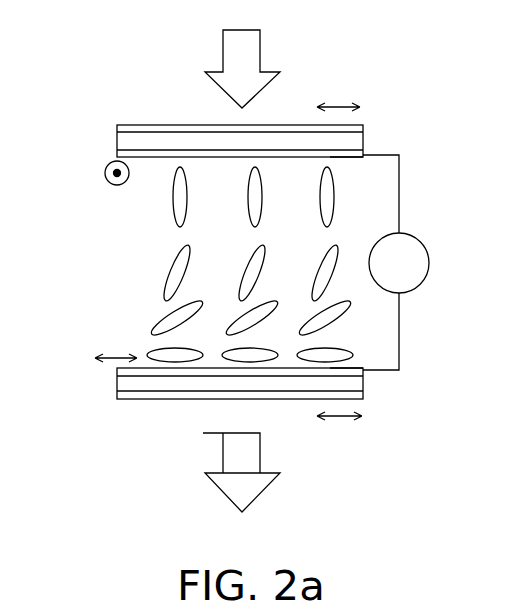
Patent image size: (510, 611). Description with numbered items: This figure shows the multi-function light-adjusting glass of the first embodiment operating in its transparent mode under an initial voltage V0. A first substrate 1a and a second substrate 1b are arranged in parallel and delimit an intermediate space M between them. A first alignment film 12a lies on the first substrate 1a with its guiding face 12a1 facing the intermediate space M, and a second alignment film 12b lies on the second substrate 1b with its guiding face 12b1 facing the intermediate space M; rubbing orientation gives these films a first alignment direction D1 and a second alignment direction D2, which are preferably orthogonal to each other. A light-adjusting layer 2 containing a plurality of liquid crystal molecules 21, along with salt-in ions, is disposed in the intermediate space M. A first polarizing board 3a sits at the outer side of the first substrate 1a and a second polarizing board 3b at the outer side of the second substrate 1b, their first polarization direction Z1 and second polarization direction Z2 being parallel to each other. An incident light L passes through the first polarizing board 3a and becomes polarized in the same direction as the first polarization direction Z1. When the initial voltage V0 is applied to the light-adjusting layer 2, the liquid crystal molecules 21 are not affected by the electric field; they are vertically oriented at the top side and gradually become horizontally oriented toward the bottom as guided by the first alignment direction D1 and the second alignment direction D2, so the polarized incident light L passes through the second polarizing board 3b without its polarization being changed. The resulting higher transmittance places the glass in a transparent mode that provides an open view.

The incident light L is at (262, 48).
The first substrate 1a is at (360, 143).
The first polarizing board 3a is at (128, 126).
The first alignment film 12a is at (366, 158).
The guiding face of the first alignment film 12a1 is at (345, 159).
The second substrate 1b is at (363, 392).
The second polarizing board 3b is at (130, 398).
The second alignment film 12b is at (363, 378).
The guiding face of the second alignment film 12b1 is at (355, 368).
The initial voltage V0 is at (396, 262).
The light-adjusting layer 2 is at (202, 264).
The liquid crystal molecules 21 is at (175, 207).
The intermediate space M is at (363, 300).
The first alignment direction D1 is at (104, 171).
The second alignment direction D2 is at (118, 355).
The first polarization direction Z1 is at (342, 104).
The second polarization direction Z2 is at (340, 420).